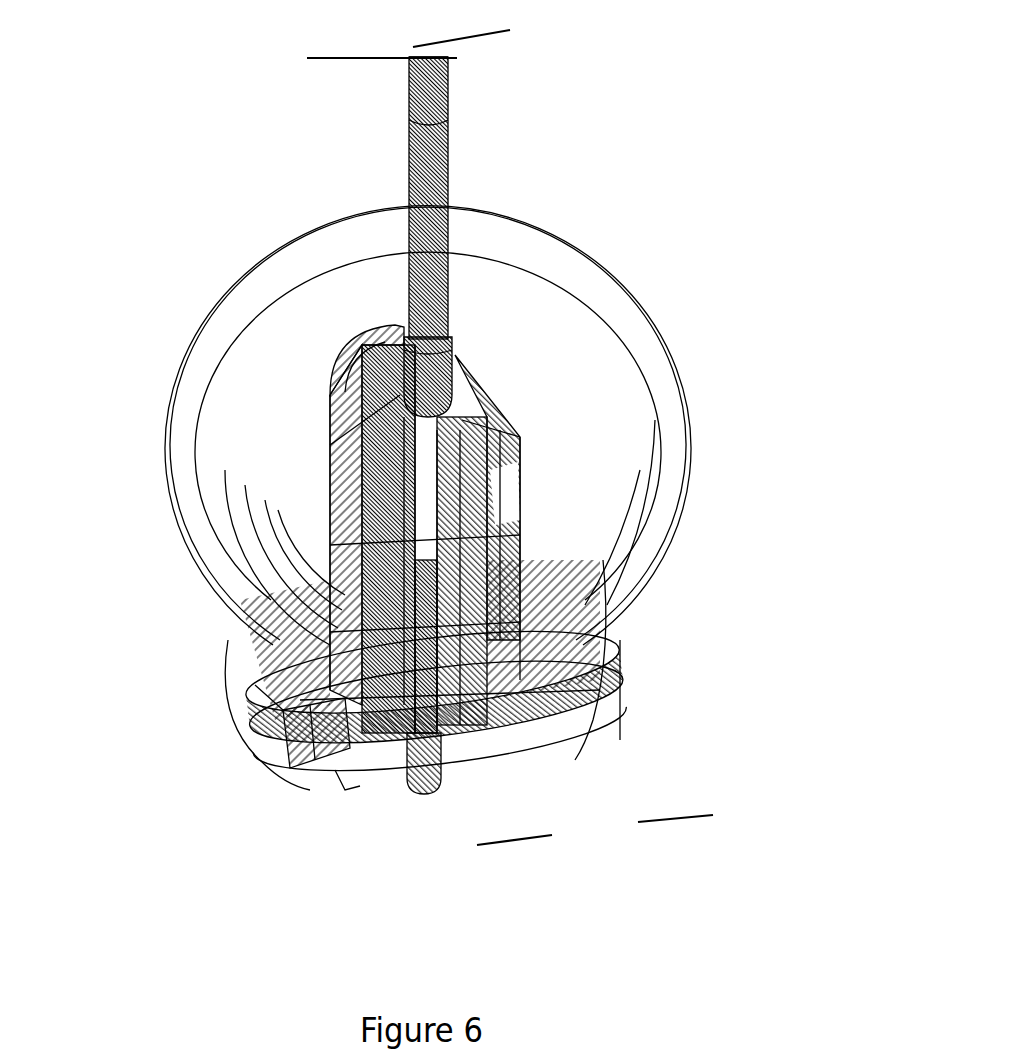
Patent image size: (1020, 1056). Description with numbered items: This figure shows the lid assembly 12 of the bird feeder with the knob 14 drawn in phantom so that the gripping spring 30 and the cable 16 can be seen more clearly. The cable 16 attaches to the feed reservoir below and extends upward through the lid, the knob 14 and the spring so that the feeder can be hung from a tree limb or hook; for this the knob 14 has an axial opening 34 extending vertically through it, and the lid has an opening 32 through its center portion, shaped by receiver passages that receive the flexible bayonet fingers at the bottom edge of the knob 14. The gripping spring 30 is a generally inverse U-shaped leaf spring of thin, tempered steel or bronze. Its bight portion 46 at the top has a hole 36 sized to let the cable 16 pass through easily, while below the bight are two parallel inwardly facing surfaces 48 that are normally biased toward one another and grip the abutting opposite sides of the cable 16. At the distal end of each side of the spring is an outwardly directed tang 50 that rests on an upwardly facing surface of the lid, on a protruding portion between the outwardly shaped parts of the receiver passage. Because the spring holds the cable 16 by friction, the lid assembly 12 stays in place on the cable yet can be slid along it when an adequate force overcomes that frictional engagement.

The lid assembly 12 is at (595, 830).
The knob 14 is at (563, 235).
The cable 16 is at (449, 82).
The gripping spring 30 is at (512, 458).
The opening 32 is at (607, 717).
The axial opening 34 is at (453, 345).
The hole 36 is at (405, 410).
The bight portion 46 is at (380, 378).
The inwardly facing surfaces 48 is at (472, 648).
The tang 50 is at (283, 733).